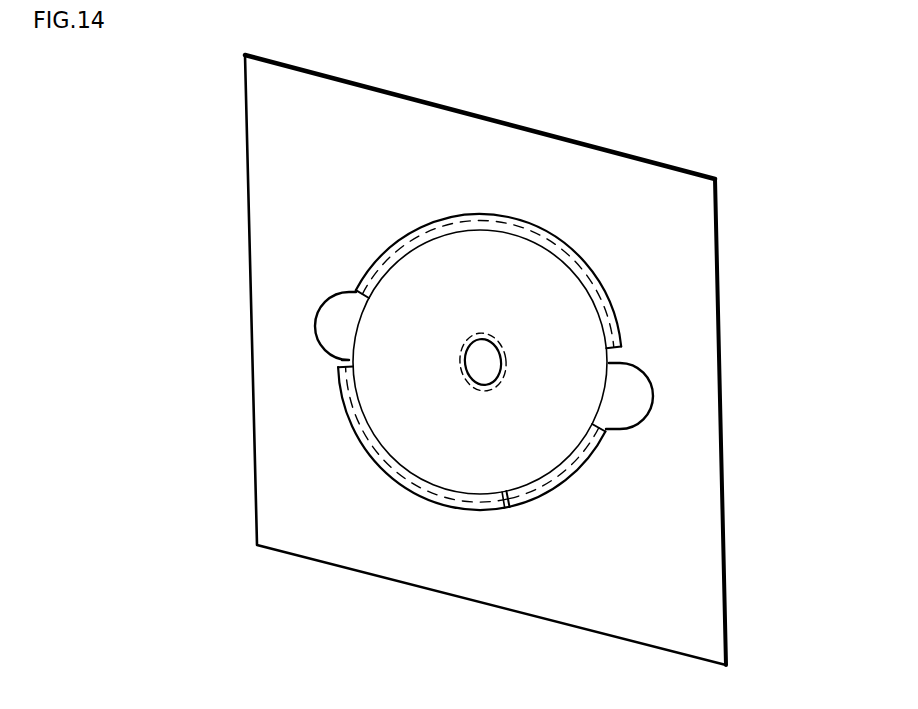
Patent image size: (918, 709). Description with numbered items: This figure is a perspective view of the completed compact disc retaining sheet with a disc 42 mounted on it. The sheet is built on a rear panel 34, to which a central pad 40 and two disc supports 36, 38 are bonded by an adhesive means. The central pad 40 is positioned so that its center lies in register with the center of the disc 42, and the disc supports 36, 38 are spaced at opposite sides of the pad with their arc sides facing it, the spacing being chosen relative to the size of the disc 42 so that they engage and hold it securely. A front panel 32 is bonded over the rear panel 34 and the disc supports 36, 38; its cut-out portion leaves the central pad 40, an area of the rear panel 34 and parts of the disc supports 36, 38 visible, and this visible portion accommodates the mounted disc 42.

The front panel 32 is at (697, 258).
The rear panel 34 is at (528, 114).
The disc support 36 is at (572, 268).
The disc support 38 is at (515, 509).
The central pad 40 is at (506, 366).
The disc 42 is at (583, 410).